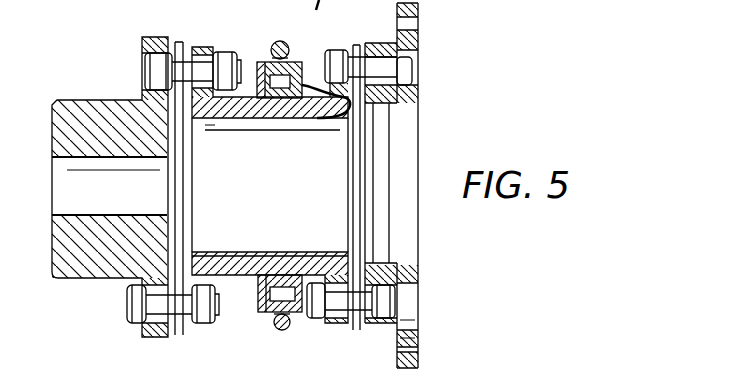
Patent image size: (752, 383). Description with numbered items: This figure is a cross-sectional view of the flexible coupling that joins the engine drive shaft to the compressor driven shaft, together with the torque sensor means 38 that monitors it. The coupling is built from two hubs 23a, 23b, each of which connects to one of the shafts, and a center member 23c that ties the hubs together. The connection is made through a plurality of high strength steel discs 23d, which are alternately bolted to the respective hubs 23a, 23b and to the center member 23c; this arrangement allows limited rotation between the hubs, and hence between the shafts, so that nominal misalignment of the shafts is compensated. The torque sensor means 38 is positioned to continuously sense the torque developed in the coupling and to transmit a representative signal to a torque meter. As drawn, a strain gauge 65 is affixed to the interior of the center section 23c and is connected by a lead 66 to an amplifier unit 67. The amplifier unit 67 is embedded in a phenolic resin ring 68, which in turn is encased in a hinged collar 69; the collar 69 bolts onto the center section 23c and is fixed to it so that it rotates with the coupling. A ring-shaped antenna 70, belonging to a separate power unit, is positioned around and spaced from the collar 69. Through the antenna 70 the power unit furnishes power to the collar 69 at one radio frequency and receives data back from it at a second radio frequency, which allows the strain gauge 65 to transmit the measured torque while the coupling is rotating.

The hub 23a is at (375, 55).
The hub 23b is at (80, 100).
The center member 23c is at (254, 258).
The high strength steel discs 23d is at (196, 28).
The torque sensor means 38 is at (260, 323).
The strain gauge 65 is at (272, 120).
The lead 66 is at (338, 120).
The amplifier unit 67 is at (263, 62).
The phenolic resin ring 68 is at (262, 297).
The hinged collar 69 is at (300, 312).
The ring-shaped antenna 70 is at (278, 39).